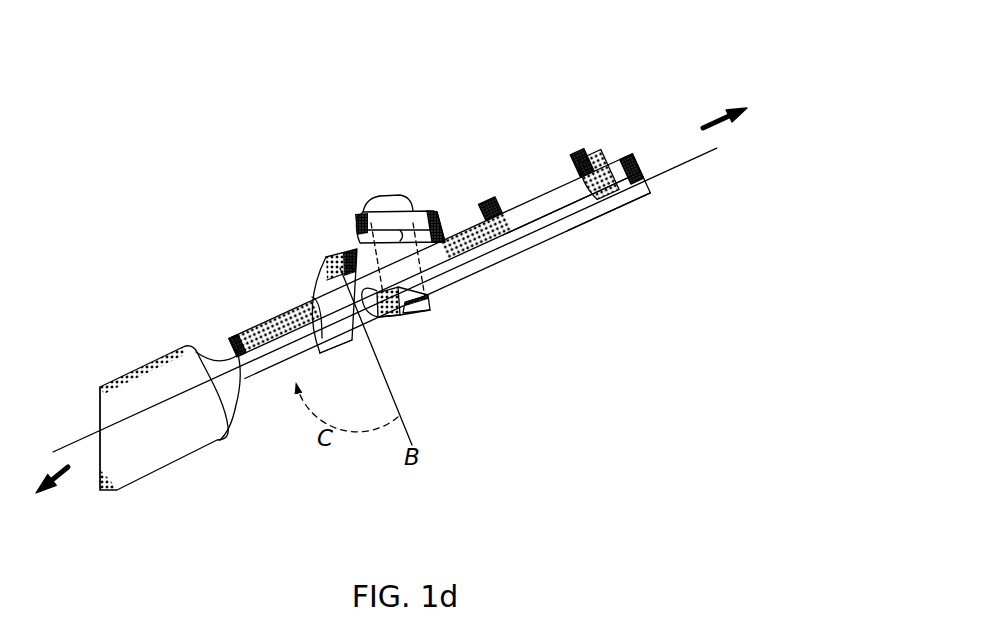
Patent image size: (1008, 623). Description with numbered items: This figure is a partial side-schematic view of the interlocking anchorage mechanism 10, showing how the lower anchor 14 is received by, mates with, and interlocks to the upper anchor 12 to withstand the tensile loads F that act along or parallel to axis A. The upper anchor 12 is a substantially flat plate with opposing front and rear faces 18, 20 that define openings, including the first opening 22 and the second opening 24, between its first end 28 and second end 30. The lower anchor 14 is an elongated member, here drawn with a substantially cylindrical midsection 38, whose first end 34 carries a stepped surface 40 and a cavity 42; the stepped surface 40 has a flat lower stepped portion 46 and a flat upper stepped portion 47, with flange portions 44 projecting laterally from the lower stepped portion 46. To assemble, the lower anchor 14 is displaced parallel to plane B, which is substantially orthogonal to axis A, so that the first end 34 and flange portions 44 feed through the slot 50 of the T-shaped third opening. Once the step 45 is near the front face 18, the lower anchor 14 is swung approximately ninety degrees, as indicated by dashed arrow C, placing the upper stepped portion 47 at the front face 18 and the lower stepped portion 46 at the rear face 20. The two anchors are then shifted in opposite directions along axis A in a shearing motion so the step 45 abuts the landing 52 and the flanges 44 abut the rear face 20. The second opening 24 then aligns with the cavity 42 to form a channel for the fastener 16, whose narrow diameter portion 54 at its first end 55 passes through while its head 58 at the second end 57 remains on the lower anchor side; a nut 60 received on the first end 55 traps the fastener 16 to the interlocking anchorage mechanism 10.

The interlocking anchorage mechanism 10 is at (633, 363).
The upper anchor 12 is at (557, 88).
The lower anchor 14 is at (232, 490).
The fastener 16 is at (327, 152).
The front face 18 is at (628, 188).
The rear face 20 is at (607, 165).
The first opening 22 is at (577, 186).
The second opening 24 is at (442, 283).
The first end 28 is at (233, 346).
The second end 30 is at (654, 154).
The first end 34 is at (452, 212).
The cylindrical midsection 38 is at (130, 505).
The stepped surface 40 is at (302, 248).
The cavity 42 is at (408, 203).
The flange portions 44 is at (400, 230).
The step 45 is at (388, 262).
The lower stepped portion 46 is at (440, 206).
The upper stepped portion 47 is at (258, 373).
The slot 50 is at (384, 315).
The landing 52 is at (312, 303).
The narrow diameter portion 54 is at (430, 303).
The first end 55 is at (423, 313).
The second end 57 is at (363, 215).
The head 58 is at (384, 203).
The nut 60 is at (411, 303).